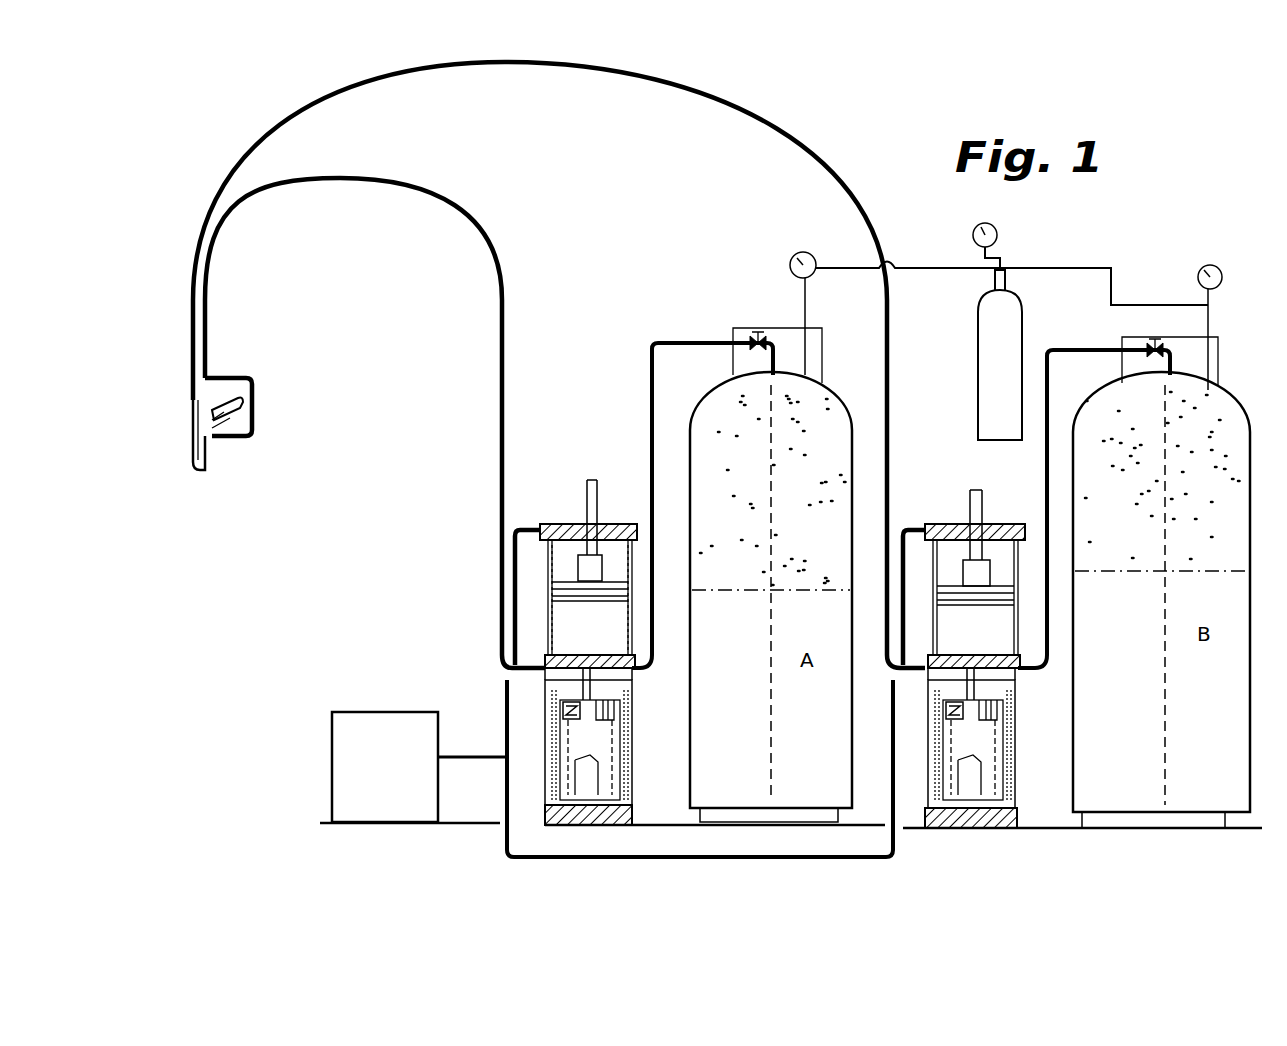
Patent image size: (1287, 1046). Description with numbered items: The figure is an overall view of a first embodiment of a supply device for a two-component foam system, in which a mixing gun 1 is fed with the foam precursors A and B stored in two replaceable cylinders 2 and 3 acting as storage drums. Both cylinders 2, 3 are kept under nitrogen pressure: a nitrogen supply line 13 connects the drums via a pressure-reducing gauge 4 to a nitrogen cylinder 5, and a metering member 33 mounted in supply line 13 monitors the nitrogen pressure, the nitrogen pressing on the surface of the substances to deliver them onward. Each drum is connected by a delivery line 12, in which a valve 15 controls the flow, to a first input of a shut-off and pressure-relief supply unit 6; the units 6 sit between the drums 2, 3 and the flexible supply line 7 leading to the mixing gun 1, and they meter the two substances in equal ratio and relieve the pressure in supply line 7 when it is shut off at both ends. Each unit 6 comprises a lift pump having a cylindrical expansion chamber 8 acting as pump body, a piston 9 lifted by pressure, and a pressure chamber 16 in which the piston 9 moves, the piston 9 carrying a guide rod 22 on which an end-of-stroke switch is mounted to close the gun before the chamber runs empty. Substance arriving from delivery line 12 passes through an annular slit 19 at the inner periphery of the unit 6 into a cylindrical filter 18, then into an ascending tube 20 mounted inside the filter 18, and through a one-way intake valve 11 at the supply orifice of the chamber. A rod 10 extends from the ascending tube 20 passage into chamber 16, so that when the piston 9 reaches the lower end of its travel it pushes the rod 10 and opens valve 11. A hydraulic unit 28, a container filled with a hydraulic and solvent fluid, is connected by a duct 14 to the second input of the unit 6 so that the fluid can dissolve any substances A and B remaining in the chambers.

The mixing gun 1 is at (215, 452).
The cylinder 2 is at (771, 597).
The cylinder 3 is at (1161, 600).
The pressure-reducing gauge 4 is at (992, 252).
The nitrogen cylinder 5 is at (980, 385).
The shut-off and pressure-relief supply unit 6 is at (596, 765).
The supply line 7 is at (762, 118).
The cylindrical expansion chamber 8 is at (632, 570).
The piston 9 is at (630, 596).
The rod 10 is at (556, 690).
The intake valve 11 is at (560, 720).
The delivery line 12 is at (672, 340).
The nitrogen supply line 13 is at (918, 266).
The duct 14 is at (620, 858).
The valve 15 is at (756, 330).
The pressure chamber 16 is at (782, 596).
The cylindrical filter 18 is at (620, 722).
The annular slit 19 is at (630, 740).
The ascending tube 20 is at (781, 757).
The guide rod 22 is at (588, 490).
The hydraulic unit 28 is at (352, 705).
The metering member 33 is at (790, 266).